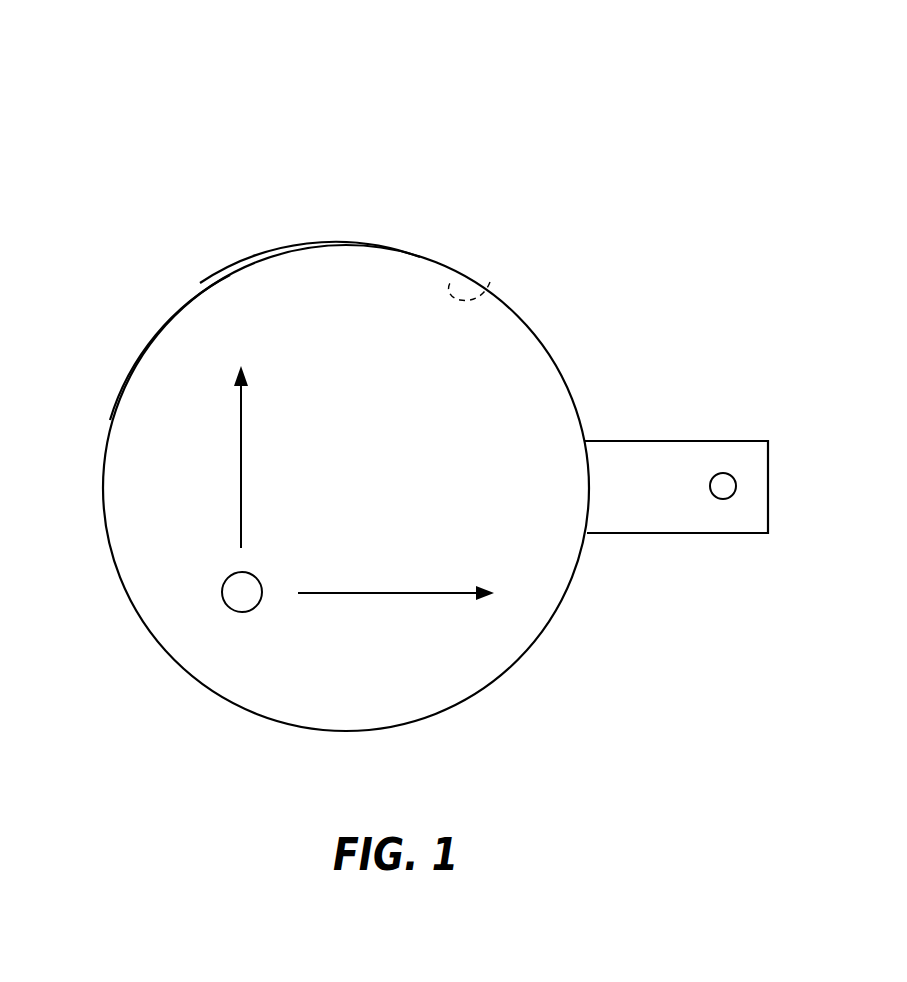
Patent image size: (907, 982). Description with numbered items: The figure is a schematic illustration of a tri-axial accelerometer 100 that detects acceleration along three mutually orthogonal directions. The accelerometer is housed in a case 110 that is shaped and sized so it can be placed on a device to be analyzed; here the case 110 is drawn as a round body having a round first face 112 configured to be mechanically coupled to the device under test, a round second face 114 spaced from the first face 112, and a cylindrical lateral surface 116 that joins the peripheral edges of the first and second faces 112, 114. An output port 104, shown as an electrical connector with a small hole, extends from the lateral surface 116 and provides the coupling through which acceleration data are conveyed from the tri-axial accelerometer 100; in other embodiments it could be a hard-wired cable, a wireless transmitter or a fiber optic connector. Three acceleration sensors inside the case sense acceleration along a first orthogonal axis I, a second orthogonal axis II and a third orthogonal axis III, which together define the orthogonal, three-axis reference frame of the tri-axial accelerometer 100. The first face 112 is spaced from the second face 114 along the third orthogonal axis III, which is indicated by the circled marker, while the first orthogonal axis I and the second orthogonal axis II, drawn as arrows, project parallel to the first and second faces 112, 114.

The tri-axial accelerometer 100 is at (748, 216).
The output port 104 is at (732, 441).
The case 110 is at (528, 331).
The first face 112 is at (490, 282).
The second face 114 is at (283, 272).
The lateral surface 116 is at (187, 309).
The first orthogonal axis I is at (240, 461).
The second orthogonal axis II is at (395, 593).
The third orthogonal axis III is at (234, 609).